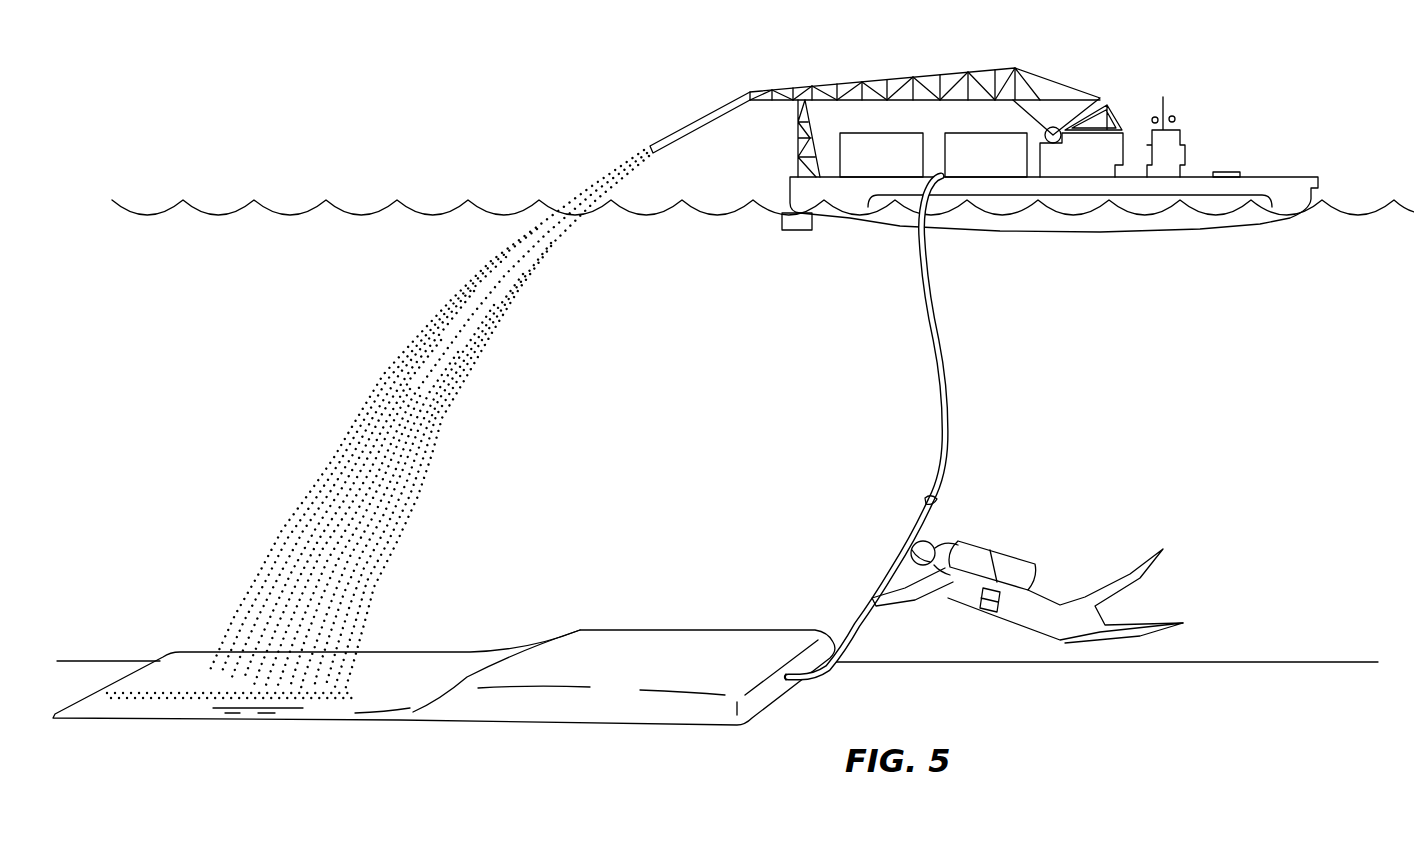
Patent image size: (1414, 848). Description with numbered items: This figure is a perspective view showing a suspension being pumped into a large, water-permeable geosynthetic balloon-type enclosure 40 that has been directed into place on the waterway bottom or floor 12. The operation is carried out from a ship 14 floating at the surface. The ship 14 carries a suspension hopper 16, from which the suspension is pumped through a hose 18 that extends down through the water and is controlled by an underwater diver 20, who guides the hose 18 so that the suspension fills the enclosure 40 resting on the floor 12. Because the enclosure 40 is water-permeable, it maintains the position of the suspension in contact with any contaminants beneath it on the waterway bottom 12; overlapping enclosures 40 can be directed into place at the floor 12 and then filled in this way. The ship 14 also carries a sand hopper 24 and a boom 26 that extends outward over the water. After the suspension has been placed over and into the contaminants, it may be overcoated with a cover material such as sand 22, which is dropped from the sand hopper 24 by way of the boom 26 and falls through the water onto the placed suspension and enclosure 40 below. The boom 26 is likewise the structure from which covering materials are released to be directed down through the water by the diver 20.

The waterway bottom or floor 12 is at (1210, 662).
The ship 14 is at (1263, 157).
The suspension hopper 16 is at (1000, 165).
The hose 18 is at (948, 398).
The underwater diver 20 is at (998, 556).
The sand 22 is at (425, 405).
The sand hopper 24 is at (894, 165).
The boom 26 is at (872, 82).
The water-permeable geosynthetic balloon-type enclosure 40 is at (427, 665).